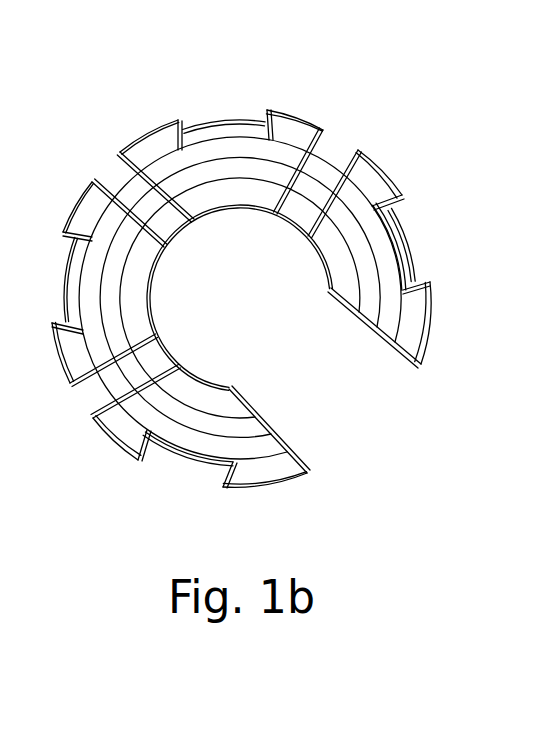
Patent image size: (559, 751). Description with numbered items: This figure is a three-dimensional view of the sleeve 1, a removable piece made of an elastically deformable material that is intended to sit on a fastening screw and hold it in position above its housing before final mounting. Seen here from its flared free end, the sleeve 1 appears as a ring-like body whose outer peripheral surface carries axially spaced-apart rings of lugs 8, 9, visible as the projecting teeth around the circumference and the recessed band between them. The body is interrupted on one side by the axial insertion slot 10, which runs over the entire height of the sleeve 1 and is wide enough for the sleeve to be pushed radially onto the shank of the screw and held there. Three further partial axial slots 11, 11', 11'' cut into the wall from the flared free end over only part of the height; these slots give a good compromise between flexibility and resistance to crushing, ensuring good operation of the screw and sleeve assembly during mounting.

The sleeve 1 is at (387, 340).
The lugs of the first ring 8 is at (293, 112).
The lugs of the second ring 9 is at (215, 118).
The axial insertion slot 10 is at (338, 408).
The partial axial slot 11 is at (100, 407).
The partial axial slot 11' is at (117, 170).
The partial axial slot 11'' is at (338, 133).